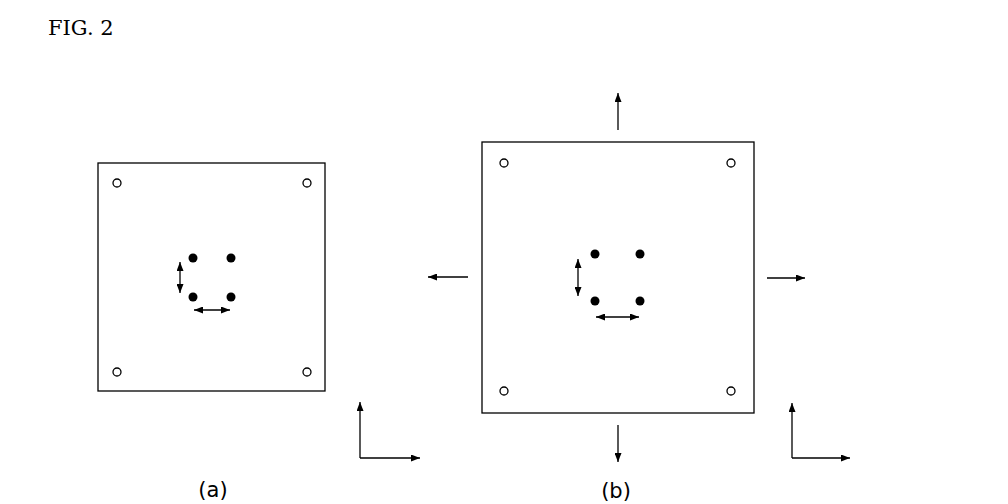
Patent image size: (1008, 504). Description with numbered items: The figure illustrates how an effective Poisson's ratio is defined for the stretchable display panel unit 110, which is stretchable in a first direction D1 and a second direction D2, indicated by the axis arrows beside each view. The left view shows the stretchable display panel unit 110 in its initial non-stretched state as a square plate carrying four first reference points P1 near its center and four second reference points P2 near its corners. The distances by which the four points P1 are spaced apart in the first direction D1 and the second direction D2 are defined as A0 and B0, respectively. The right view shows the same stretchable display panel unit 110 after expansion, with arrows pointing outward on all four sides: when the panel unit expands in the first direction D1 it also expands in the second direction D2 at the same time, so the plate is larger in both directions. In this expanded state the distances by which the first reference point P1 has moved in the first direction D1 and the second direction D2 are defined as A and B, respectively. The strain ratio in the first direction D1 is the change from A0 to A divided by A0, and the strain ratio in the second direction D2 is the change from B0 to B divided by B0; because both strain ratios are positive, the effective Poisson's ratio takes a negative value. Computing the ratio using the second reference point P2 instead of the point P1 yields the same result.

The stretchable display panel unit 110 is at (247, 160).
The first reference point P1 is at (189, 253).
The second reference point P2 is at (117, 178).
The initial first-direction distance A0 is at (212, 324).
The initial second-direction distance B0 is at (165, 277).
The first-direction distance in expanded state A is at (617, 332).
The second-direction distance in expanded state B is at (568, 277).
The first direction D1 is at (621, 459).
The second direction D2 is at (578, 415).